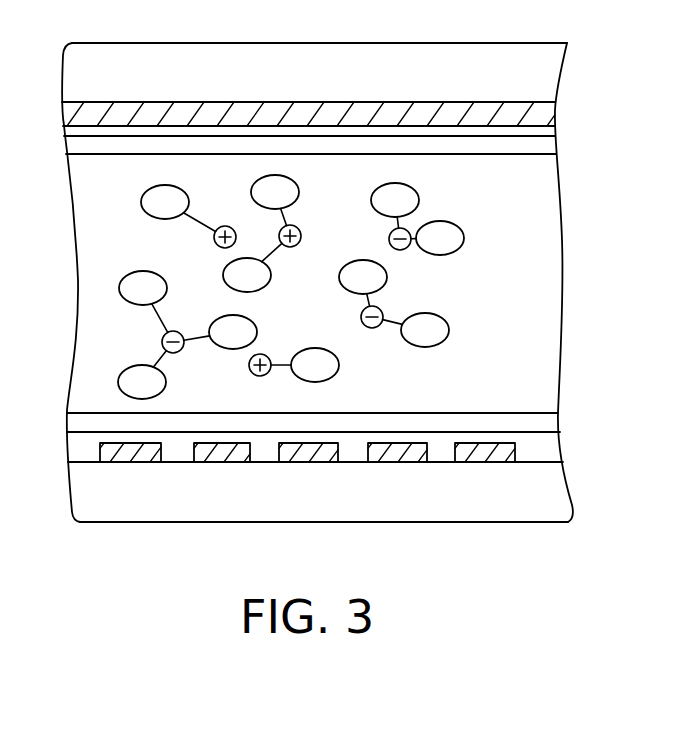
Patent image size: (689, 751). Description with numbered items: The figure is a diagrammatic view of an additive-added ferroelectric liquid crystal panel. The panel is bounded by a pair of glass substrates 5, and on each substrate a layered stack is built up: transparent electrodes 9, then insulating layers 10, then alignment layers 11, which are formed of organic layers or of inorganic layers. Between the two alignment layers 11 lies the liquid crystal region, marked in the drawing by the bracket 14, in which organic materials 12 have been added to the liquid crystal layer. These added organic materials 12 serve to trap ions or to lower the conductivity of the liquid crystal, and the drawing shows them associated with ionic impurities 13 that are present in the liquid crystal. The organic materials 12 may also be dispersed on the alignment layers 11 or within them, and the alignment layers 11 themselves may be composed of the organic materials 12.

The glass substrate 5 is at (547, 70).
The transparent electrode 9 is at (548, 113).
The insulating layer 10 is at (556, 126).
The alignment layer 11 is at (547, 142).
The organic material 12 is at (420, 195).
The ionic impurity 13 is at (300, 232).
The display medium layer 14 is at (50, 408).